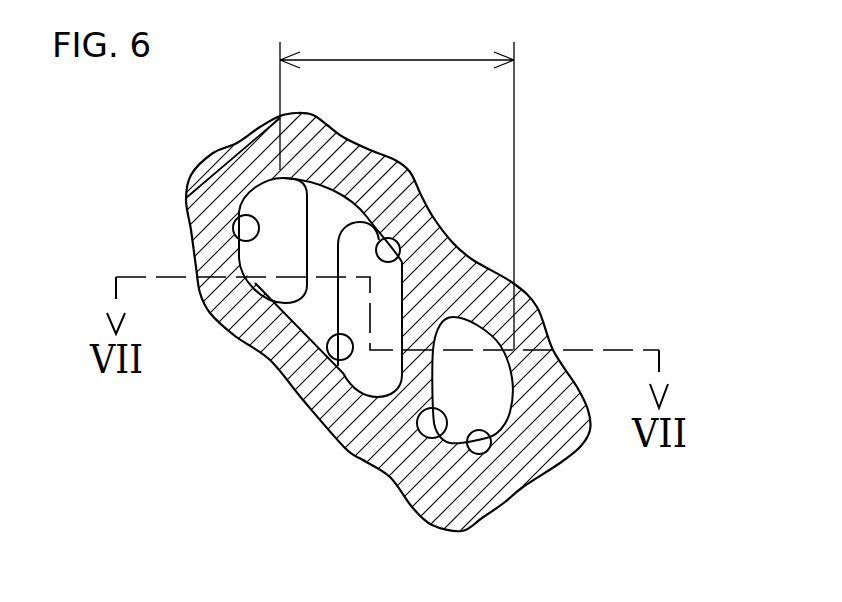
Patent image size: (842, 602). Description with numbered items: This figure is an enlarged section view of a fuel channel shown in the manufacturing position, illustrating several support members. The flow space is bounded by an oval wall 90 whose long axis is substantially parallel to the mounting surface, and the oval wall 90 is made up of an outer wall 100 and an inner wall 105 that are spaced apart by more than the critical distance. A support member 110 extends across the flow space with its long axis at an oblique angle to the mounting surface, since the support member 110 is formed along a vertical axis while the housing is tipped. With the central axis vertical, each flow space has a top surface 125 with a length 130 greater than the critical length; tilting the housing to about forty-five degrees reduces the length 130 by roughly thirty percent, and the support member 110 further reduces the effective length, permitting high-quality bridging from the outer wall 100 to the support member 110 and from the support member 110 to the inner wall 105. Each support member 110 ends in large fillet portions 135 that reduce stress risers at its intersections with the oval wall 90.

The oval wall 90 is at (482, 328).
The outer wall 100 is at (467, 452).
The inner wall 105 is at (236, 241).
The support member 110 is at (320, 250).
The top surface 125 is at (400, 262).
The length 130 is at (396, 62).
The fillet portion 135 is at (327, 352).